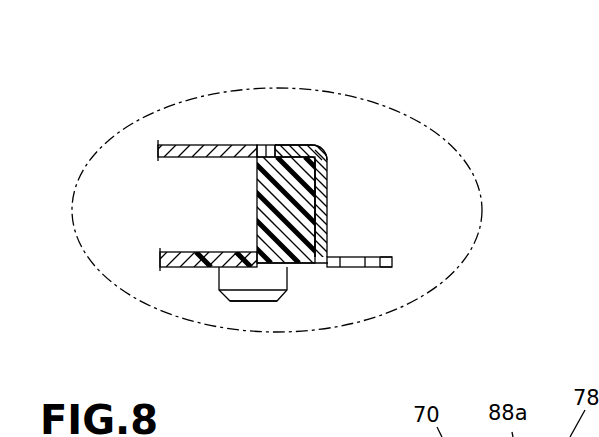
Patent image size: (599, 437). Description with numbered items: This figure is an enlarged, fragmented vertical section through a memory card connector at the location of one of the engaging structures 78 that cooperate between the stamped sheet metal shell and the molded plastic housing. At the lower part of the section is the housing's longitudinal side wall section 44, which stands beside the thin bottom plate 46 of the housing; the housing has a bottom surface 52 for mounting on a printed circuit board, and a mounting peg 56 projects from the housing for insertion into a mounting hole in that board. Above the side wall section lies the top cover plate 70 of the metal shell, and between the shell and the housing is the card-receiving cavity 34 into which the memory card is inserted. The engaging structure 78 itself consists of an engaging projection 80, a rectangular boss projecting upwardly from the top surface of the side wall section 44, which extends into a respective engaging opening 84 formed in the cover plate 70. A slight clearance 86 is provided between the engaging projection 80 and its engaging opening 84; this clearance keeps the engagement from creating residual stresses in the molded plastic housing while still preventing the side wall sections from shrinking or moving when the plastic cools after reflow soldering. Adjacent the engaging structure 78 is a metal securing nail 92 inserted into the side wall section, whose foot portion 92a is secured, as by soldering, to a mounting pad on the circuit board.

The cavity 34 is at (197, 232).
The longitudinal side wall section 44 is at (300, 255).
The bottom plate 46 is at (217, 268).
The bottom surface 52 is at (177, 268).
The mounting peg 56 is at (256, 278).
The top cover plate 70 is at (185, 145).
The engaging structure 78 is at (278, 141).
The engaging projection 80 is at (270, 145).
The engaging opening 84 is at (297, 143).
The clearance 86 is at (255, 145).
The metal securing nail 92 is at (382, 252).
The foot portion 92a is at (388, 270).